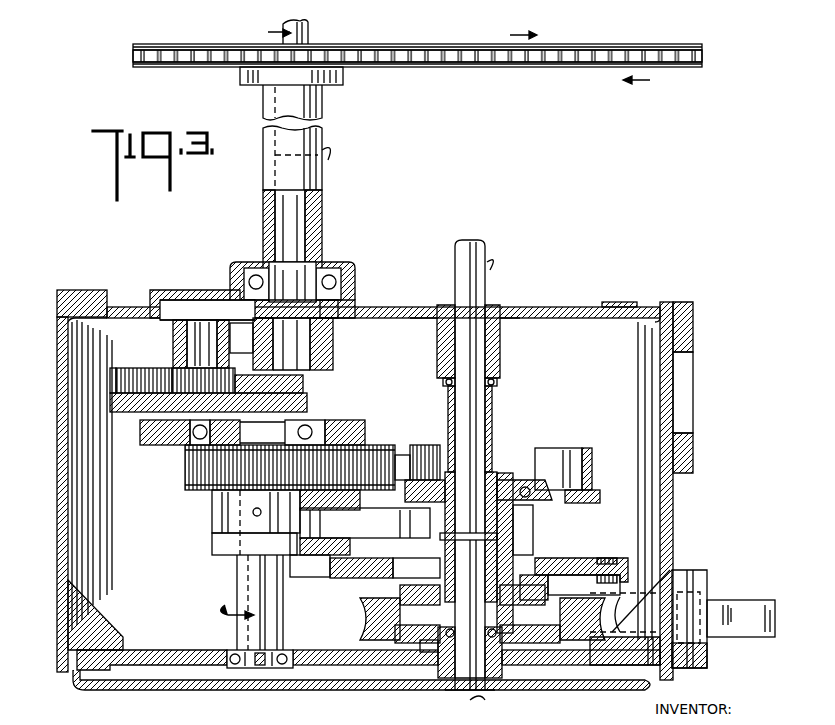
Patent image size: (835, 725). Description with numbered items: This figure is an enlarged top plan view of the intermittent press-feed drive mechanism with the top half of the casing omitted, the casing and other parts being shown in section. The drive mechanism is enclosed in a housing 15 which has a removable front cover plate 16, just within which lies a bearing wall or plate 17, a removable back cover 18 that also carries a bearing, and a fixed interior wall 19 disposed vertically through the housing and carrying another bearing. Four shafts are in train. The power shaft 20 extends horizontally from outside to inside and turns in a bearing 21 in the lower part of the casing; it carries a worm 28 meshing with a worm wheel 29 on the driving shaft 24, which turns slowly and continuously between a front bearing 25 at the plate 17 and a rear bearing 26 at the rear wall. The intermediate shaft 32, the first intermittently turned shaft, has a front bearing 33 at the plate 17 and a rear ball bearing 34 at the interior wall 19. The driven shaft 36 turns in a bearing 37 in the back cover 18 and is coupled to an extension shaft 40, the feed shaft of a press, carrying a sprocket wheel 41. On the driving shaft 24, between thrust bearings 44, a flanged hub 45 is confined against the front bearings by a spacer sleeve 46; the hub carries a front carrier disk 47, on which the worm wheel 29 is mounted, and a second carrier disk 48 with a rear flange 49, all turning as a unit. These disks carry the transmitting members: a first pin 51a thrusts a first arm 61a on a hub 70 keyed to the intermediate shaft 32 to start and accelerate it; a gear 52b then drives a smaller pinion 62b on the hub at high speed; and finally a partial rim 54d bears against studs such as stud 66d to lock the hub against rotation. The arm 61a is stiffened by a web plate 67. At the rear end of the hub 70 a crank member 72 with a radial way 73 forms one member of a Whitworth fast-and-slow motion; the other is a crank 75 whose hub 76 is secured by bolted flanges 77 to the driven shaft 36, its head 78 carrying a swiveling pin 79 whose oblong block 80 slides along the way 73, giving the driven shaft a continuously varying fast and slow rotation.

The housing 15 is at (552, 307).
The front cover plate 16 is at (122, 692).
The bearing wall or plate 17 is at (185, 666).
The back cover or wall 18 is at (178, 292).
The fixed interior wall 19 is at (150, 445).
The power shaft 20 is at (612, 606).
The bearing 21 is at (688, 646).
The driving shaft 24 is at (455, 258).
The front bearing 25 is at (455, 680).
The rear bearing 26 is at (500, 352).
The worm 28 is at (432, 650).
The worm wheel 29 is at (362, 628).
The intermediate shaft 32 is at (240, 598).
The front bearing 33 is at (233, 668).
The rear bearing 34 is at (310, 422).
The driven shaft 36 is at (305, 228).
The bearing 37 is at (345, 272).
The extension shaft 40 is at (309, 30).
The sprocket wheel 41 is at (407, 44).
The thrust bearings 44 is at (497, 384).
The flanged hub 45 is at (513, 520).
The spacer sleeve 46 is at (492, 440).
The front carrier disk 47 is at (562, 562).
The second carrier disk 48 is at (596, 492).
The rear flange 49 is at (592, 460).
The first pin 51a is at (352, 530).
The gear 52b is at (397, 455).
The partial rim 54d is at (622, 558).
The first arm 61a is at (412, 494).
The pinion 62b is at (185, 474).
The stud 66d is at (291, 577).
The web plate 67 is at (368, 578).
The hub 70 is at (212, 508).
The crank member 72 is at (143, 410).
The radial groove or way 73 is at (120, 370).
The crank 75 is at (241, 338).
The hub 76 is at (334, 361).
The bolted flanges 77 is at (338, 314).
The head 78 is at (176, 345).
The pin 79 is at (203, 326).
The oblong block 80 is at (168, 376).